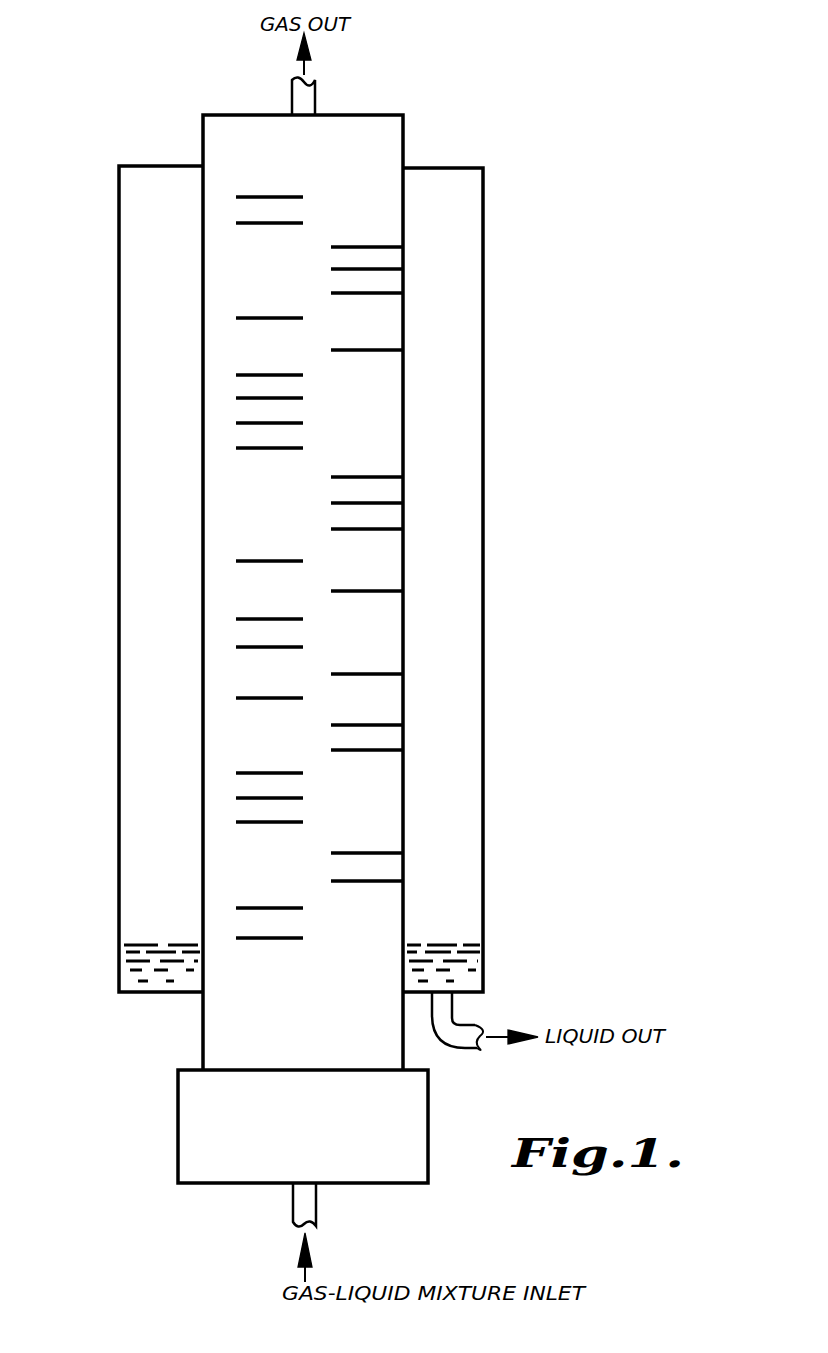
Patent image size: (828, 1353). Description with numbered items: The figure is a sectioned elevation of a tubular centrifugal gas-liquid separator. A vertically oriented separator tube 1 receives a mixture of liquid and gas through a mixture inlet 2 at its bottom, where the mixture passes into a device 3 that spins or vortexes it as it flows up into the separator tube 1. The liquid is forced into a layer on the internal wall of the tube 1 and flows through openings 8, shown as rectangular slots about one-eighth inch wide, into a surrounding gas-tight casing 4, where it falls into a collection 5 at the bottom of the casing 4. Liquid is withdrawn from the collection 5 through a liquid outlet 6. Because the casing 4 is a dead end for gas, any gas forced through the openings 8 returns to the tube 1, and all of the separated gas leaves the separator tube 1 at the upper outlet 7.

The separator tube 1 is at (203, 1031).
The mixture inlet 2 is at (318, 1209).
The spinning device 3 is at (178, 1117).
The gas-tight casing 4 is at (484, 512).
The liquid collection 5 is at (465, 965).
The liquid outlet 6 is at (458, 1052).
The upper gas outlet 7 is at (316, 97).
The openings 8 is at (255, 374).